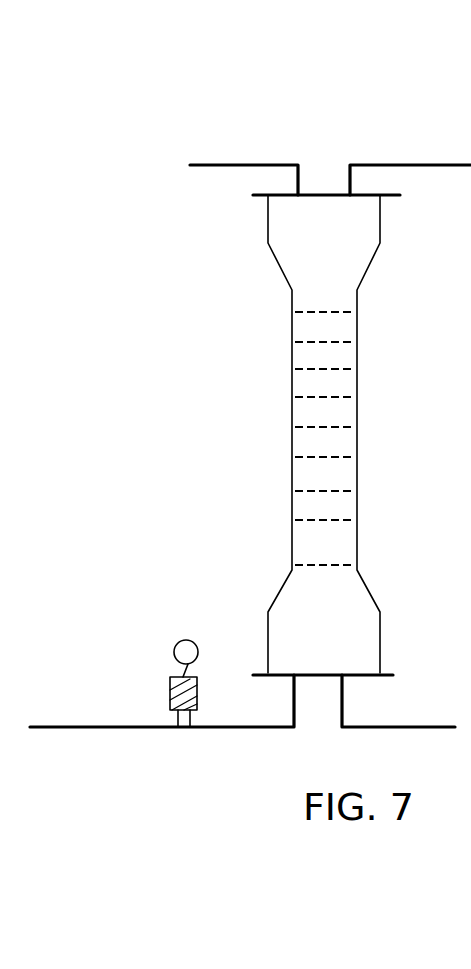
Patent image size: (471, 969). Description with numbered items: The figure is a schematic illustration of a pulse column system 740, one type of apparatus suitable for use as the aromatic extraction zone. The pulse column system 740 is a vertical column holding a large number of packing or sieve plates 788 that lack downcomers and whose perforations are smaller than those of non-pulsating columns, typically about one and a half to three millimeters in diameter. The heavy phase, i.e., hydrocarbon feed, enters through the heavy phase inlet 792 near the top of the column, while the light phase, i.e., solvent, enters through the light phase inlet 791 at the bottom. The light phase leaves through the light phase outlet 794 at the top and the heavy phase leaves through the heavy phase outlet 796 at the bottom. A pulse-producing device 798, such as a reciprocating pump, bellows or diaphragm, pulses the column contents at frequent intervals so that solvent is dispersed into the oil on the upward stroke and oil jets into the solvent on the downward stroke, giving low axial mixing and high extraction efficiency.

The pulse column system 740 is at (139, 103).
The packing or sieve plates 788 is at (308, 340).
The light phase inlet 791 is at (162, 721).
The heavy phase inlet 792 is at (231, 180).
The light phase outlet 794 is at (410, 180).
The heavy phase outlet 796 is at (398, 721).
The pulse-producing device 798 is at (175, 688).